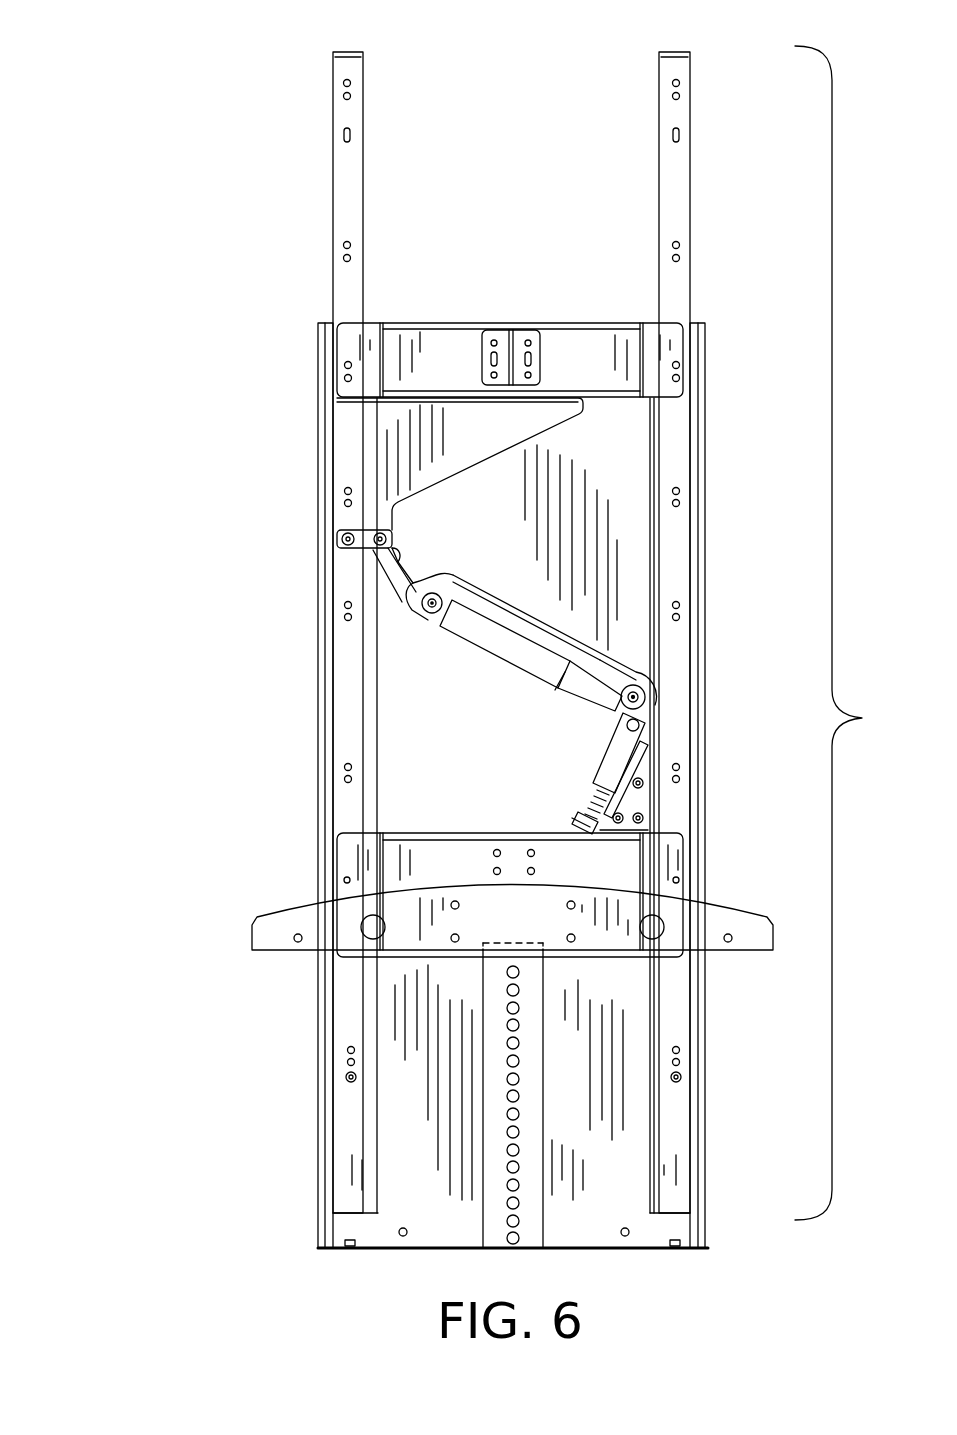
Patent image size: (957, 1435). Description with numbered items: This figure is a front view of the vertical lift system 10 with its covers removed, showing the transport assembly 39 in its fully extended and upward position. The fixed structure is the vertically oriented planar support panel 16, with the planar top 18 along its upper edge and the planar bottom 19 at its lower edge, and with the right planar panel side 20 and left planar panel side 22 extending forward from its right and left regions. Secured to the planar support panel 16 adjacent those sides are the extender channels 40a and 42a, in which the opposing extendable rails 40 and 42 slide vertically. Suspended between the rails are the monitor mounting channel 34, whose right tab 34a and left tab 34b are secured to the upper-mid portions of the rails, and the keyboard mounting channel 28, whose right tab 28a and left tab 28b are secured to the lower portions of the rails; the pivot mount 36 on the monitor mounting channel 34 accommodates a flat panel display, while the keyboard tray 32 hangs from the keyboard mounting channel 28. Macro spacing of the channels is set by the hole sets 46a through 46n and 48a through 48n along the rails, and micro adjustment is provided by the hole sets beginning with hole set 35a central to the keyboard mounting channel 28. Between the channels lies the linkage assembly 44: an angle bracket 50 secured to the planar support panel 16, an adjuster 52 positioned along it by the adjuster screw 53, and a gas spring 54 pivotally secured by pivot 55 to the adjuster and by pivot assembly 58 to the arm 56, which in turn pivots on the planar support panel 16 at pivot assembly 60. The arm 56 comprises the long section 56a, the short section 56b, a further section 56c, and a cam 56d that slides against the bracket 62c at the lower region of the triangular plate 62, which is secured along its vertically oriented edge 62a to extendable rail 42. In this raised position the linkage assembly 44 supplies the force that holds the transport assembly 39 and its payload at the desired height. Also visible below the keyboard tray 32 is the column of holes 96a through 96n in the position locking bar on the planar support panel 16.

The vertical lift system 10 is at (120, 98).
The planar support panel 16 is at (517, 1117).
The planar top 18 is at (552, 332).
The planar bottom 19 is at (513, 1254).
The right planar panel side 20 is at (712, 393).
The left planar panel side 22 is at (308, 785).
The keyboard mounting channel 28 is at (505, 863).
The right tab 28a is at (672, 848).
The left tab 28b is at (347, 873).
The keyboard tray 32 is at (242, 923).
The monitor mounting channel 34 is at (482, 318).
The right tab 34a is at (670, 332).
The left tab 34b is at (274, 342).
The hole set 35a is at (465, 832).
The pivot mount 36 is at (490, 312).
The transport assembly 39 is at (851, 633).
The extendable rail 40 is at (735, 632).
The extender channel 40a is at (695, 438).
The extendable rail 42 is at (281, 630).
The extender channel 42a is at (330, 372).
The linkage assembly 44 is at (432, 667).
The hole set 46a is at (685, 84).
The hole set 46n is at (700, 885).
The hole set 48a is at (343, 88).
The hole set 48n is at (340, 880).
The angle bracket 50 is at (642, 798).
The adjuster 52 is at (636, 748).
The adjuster screw 53 is at (575, 791).
The gas spring 54 is at (531, 667).
The pivot 55 is at (640, 722).
The arm 56 is at (477, 617).
The arm section 56a is at (607, 667).
The short section 56b is at (521, 601).
The section 56c is at (289, 594).
The cam 56d is at (314, 582).
The pivot assembly 58 is at (348, 632).
The pivot assembly 60 is at (645, 692).
The triangular plate 62 is at (393, 509).
The vertically oriented edge 62a is at (393, 524).
The bracket 62c is at (313, 524).
The hole 96a is at (506, 975).
The hole 96n is at (468, 1258).